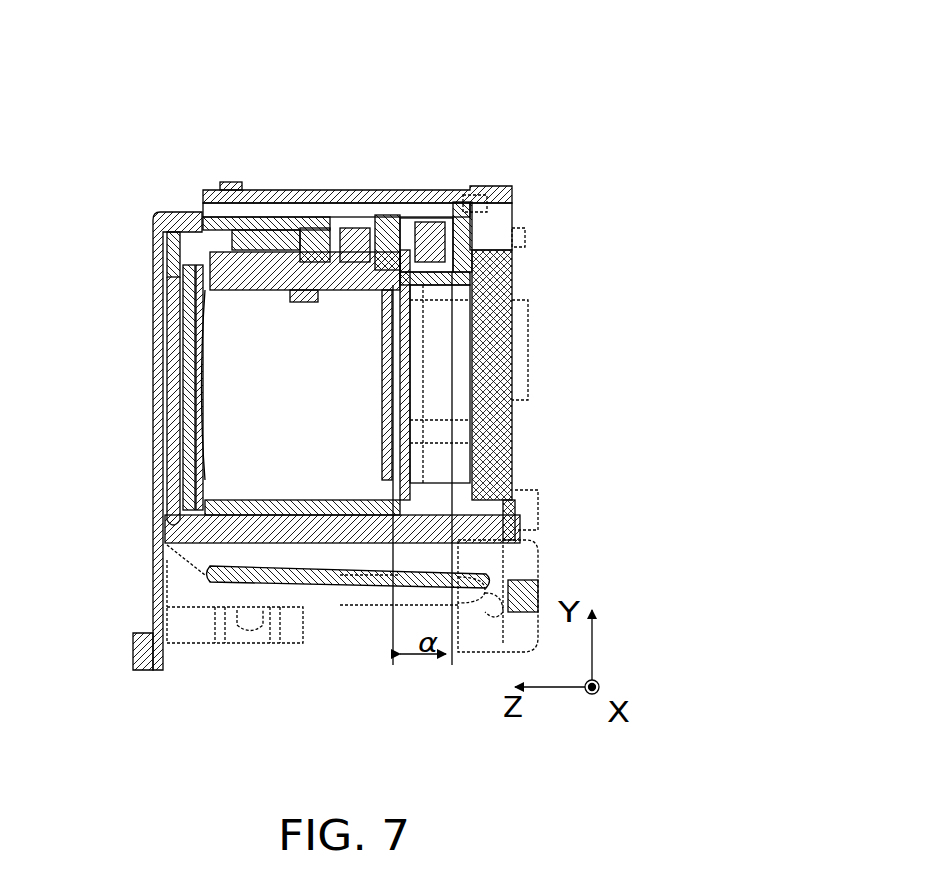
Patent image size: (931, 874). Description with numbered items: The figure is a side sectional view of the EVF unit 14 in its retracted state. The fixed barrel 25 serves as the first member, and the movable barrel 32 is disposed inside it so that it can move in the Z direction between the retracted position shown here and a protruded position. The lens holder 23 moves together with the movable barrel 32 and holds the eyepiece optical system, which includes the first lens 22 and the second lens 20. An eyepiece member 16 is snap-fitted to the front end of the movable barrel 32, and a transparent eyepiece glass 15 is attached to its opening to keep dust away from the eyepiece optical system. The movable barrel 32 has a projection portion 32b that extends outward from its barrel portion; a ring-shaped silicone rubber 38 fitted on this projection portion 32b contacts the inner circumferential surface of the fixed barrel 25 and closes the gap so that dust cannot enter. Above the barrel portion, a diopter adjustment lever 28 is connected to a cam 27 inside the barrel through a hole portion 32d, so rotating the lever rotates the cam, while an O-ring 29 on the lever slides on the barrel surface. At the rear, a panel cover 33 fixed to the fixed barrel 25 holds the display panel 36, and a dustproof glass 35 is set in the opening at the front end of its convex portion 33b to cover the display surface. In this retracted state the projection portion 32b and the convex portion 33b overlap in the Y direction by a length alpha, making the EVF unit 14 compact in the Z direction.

The EVF unit 14 is at (547, 93).
The eyepiece glass 15 is at (170, 640).
The eyepiece member 16 is at (172, 222).
The second lens 20 is at (128, 387).
The first lens 22 is at (226, 408).
The lens holder 23 is at (290, 236).
The fixed barrel 25 is at (425, 190).
The cam 27 is at (262, 278).
The diopter adjustment lever 28 is at (345, 222).
The O-ring 29 is at (383, 232).
The movable barrel 32 is at (390, 240).
The projection portion 32b is at (415, 215).
The hole portion 32d is at (288, 275).
The panel cover 33 is at (444, 250).
The convex portion 33b is at (476, 232).
The dustproof glass 35 is at (403, 415).
The display panel 36 is at (483, 258).
The silicone rubber 38 is at (438, 185).